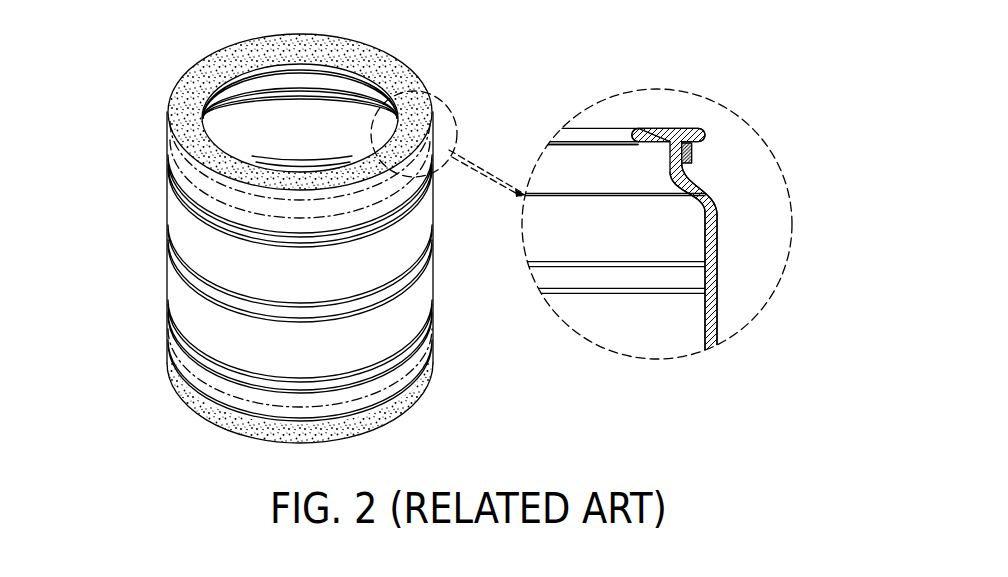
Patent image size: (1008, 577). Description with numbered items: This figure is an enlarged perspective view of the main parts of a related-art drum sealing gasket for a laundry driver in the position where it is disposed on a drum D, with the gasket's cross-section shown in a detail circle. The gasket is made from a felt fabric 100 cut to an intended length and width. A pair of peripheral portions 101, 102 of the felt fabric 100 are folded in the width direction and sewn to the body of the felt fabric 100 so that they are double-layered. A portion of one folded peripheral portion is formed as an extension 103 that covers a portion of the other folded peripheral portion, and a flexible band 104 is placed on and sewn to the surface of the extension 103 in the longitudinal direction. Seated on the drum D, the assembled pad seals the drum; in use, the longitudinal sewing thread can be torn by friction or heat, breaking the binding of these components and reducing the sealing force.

The felt fabric 100 is at (675, 119).
The peripheral portion 101 is at (704, 127).
The peripheral portion 102 is at (660, 141).
The extension 103 is at (710, 163).
The flexible band 104 is at (693, 146).
The drum D is at (178, 225).